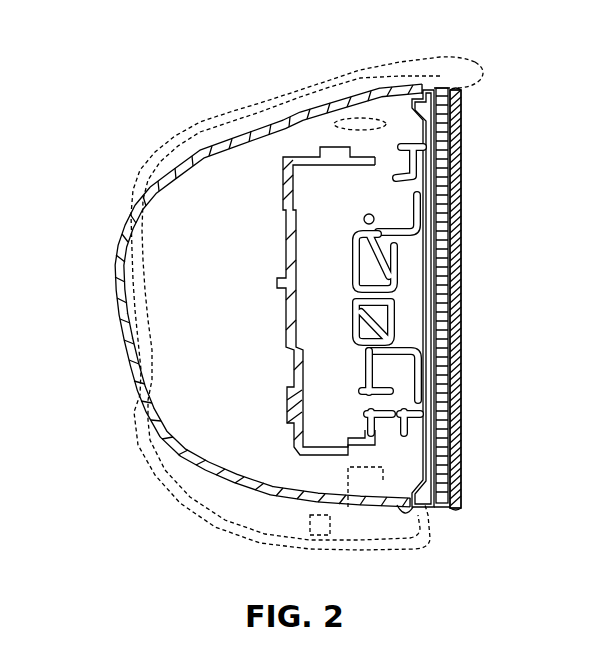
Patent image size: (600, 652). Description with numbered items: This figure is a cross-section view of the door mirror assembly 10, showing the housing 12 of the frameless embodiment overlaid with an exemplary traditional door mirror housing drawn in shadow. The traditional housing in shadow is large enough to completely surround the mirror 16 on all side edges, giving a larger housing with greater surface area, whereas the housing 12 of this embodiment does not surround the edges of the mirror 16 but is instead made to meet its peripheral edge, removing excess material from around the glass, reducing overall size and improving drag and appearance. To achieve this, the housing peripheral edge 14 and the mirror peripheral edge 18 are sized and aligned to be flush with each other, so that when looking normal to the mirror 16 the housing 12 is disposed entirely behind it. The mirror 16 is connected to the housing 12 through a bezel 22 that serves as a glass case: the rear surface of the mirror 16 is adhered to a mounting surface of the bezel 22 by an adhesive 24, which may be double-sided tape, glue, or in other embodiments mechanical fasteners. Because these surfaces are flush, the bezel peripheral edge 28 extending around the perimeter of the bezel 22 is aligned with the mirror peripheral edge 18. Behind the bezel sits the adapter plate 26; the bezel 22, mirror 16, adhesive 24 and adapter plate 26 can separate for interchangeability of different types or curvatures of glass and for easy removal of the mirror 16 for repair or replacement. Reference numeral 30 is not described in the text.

The door mirror assembly 10 is at (98, 268).
The housing 12 is at (285, 120).
The housing peripheral edge 14 is at (438, 86).
The mirror 16 is at (462, 212).
The mirror peripheral edge 18 is at (462, 92).
The bezel 22 is at (445, 248).
The adhesive 24 is at (453, 397).
The adapter plate 26 is at (416, 314).
The bezel peripheral edge 28 is at (453, 90).
The spring clips 30 is at (356, 298).